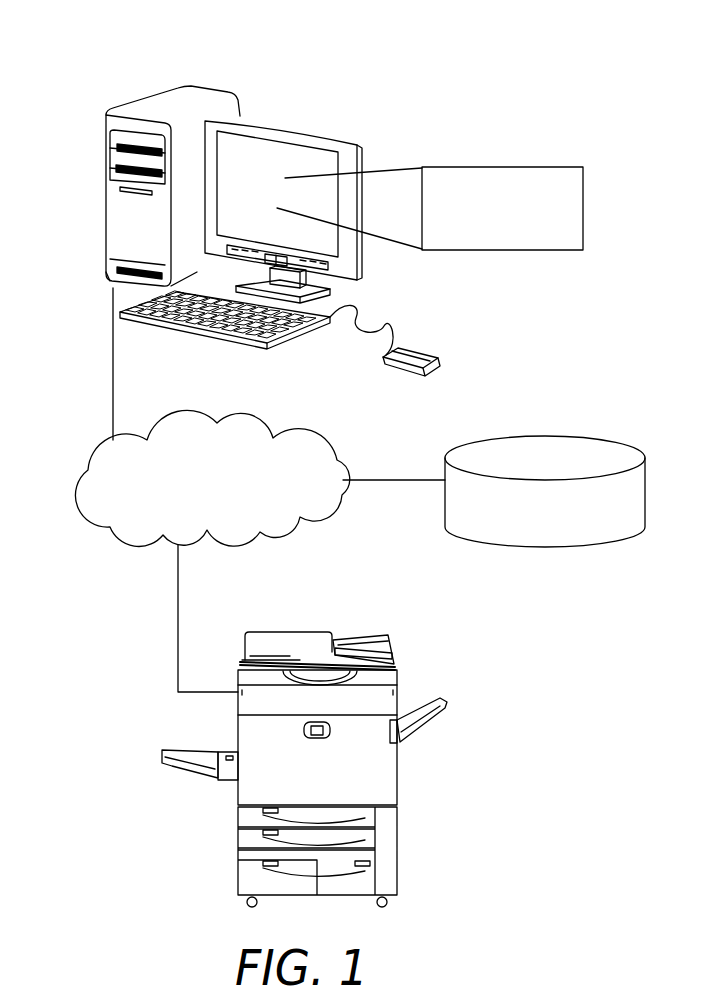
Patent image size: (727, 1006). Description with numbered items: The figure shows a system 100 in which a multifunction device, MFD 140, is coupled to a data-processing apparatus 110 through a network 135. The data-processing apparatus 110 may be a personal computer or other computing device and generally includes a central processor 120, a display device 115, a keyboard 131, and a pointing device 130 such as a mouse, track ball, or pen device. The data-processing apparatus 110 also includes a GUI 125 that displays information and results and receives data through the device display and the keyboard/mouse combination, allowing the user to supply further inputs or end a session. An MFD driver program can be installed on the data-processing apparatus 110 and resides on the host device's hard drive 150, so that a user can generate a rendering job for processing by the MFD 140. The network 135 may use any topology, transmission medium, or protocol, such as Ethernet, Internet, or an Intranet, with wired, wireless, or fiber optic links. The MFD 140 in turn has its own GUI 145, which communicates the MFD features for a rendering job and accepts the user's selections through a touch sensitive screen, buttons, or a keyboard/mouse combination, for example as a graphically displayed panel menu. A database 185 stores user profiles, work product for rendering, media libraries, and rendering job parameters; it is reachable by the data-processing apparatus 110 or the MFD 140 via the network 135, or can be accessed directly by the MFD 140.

The system 100 is at (450, 62).
The data-processing apparatus 110 is at (305, 158).
The display device 115 is at (287, 122).
The central processor 120 is at (108, 278).
The GUI 125 is at (522, 166).
The pointing device 130 is at (414, 352).
The keyboard 131 is at (198, 325).
The network 135 is at (245, 424).
The MFD 140 is at (282, 630).
The GUI 145 is at (395, 660).
The hard drive 150 is at (141, 100).
The database 185 is at (585, 438).